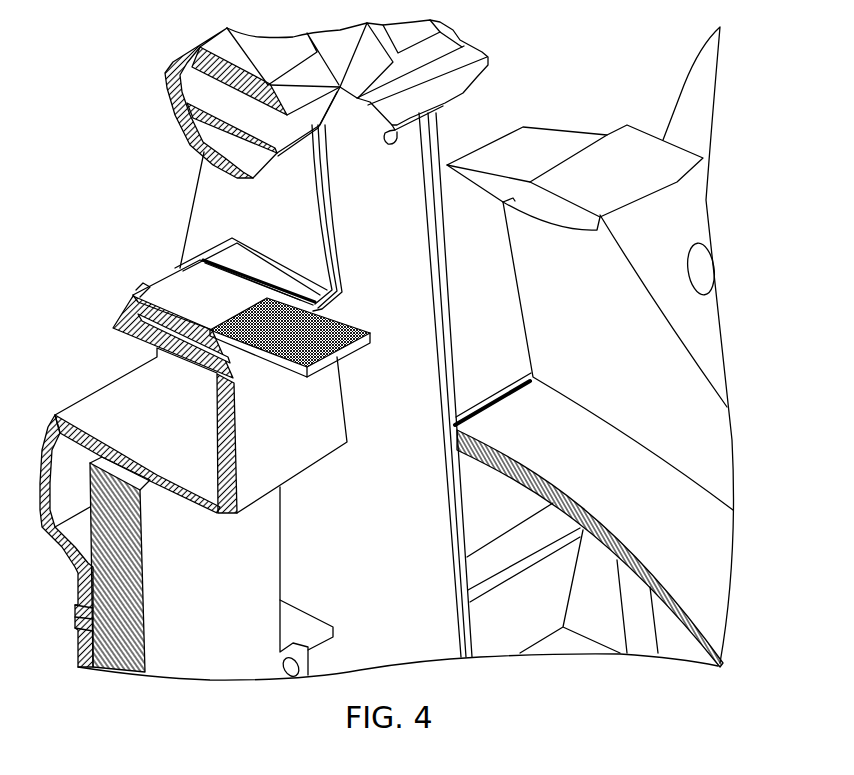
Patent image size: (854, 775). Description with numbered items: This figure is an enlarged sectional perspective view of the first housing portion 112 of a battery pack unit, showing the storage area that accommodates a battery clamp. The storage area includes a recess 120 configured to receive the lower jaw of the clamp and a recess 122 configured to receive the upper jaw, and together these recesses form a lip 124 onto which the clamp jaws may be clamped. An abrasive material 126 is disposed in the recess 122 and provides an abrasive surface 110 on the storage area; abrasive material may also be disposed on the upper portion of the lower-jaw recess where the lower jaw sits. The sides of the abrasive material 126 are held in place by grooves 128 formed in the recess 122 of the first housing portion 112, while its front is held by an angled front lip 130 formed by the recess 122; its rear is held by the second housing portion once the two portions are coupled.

The abrasive surface 110 is at (360, 337).
The first housing portion 112 is at (210, 190).
The recess 120 is at (198, 442).
The recess 122 is at (140, 285).
The lip 124 is at (115, 318).
The abrasive material 126 is at (333, 360).
The groove 128 is at (248, 285).
The angled front lip 130 is at (180, 267).